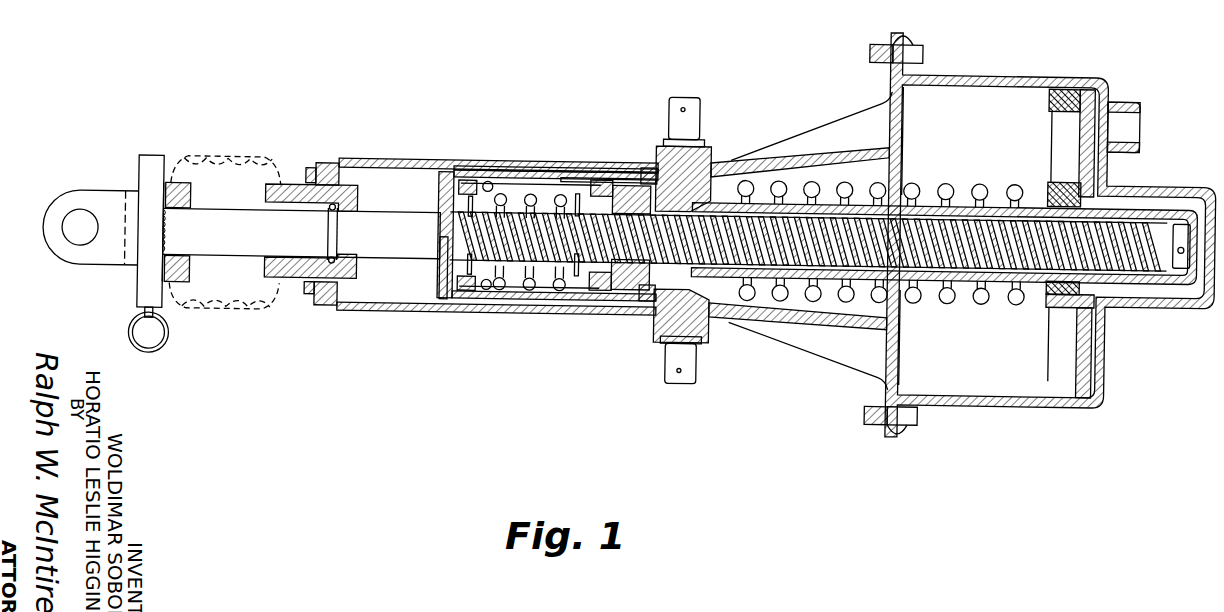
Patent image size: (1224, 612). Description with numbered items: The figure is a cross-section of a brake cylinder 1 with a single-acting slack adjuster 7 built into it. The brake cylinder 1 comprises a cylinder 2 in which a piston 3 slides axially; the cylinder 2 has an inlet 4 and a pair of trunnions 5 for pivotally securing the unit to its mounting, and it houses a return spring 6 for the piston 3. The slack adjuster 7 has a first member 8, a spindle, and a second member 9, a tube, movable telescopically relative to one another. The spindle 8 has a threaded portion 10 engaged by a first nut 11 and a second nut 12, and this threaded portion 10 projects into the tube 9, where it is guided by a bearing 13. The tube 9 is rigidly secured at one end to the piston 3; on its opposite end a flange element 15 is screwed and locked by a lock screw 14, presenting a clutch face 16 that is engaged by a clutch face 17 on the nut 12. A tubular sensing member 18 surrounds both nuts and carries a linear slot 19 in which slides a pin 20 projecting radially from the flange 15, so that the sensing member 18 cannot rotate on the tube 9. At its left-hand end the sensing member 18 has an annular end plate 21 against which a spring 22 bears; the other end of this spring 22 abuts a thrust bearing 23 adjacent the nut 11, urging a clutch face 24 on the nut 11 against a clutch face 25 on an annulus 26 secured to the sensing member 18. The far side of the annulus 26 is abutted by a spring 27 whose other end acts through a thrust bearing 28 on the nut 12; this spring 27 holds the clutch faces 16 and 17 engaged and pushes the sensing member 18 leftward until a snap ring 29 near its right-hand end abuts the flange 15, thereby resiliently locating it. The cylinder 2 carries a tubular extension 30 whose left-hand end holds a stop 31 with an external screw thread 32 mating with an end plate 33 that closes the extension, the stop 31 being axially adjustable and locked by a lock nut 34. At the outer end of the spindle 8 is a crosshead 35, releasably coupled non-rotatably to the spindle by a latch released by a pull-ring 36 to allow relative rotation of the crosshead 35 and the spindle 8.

The brake cylinder 1 is at (978, 60).
The cylinder 2 is at (790, 153).
The piston 3 is at (1099, 71).
The inlet 4 is at (1140, 114).
The trunnions 5 is at (697, 111).
The return spring 6 is at (832, 292).
The slack adjuster 7 is at (557, 310).
The first member 8 is at (398, 248).
The second member 9 is at (920, 176).
The threaded portion 10 is at (988, 202).
The first nut 11 is at (512, 297).
The second nut 12 is at (630, 296).
The bearing 13 is at (1181, 258).
The lock screw 14 is at (705, 166).
The flange element 15 is at (660, 297).
The clutch face 16 is at (620, 176).
The clutch face 17 is at (640, 184).
The sensing member 18 is at (545, 163).
The linear slot 19 is at (590, 176).
The pin 20 is at (655, 165).
The annular end plate 21 is at (445, 285).
The spring 22 is at (460, 170).
The thrust bearing 23 is at (487, 178).
The clutch face 24 is at (528, 168).
The clutch face 25 is at (480, 295).
The annulus 26 is at (510, 290).
The spring 27 is at (562, 288).
The thrust bearing 28 is at (598, 296).
The snap ring 29 is at (705, 310).
The tubular extension 30 is at (373, 311).
The stop 31 is at (293, 278).
The screw thread 32 is at (345, 290).
The end plate 33 is at (330, 164).
The lock nut 34 is at (308, 170).
The crosshead 35 is at (80, 259).
The pull-ring 36 is at (172, 340).